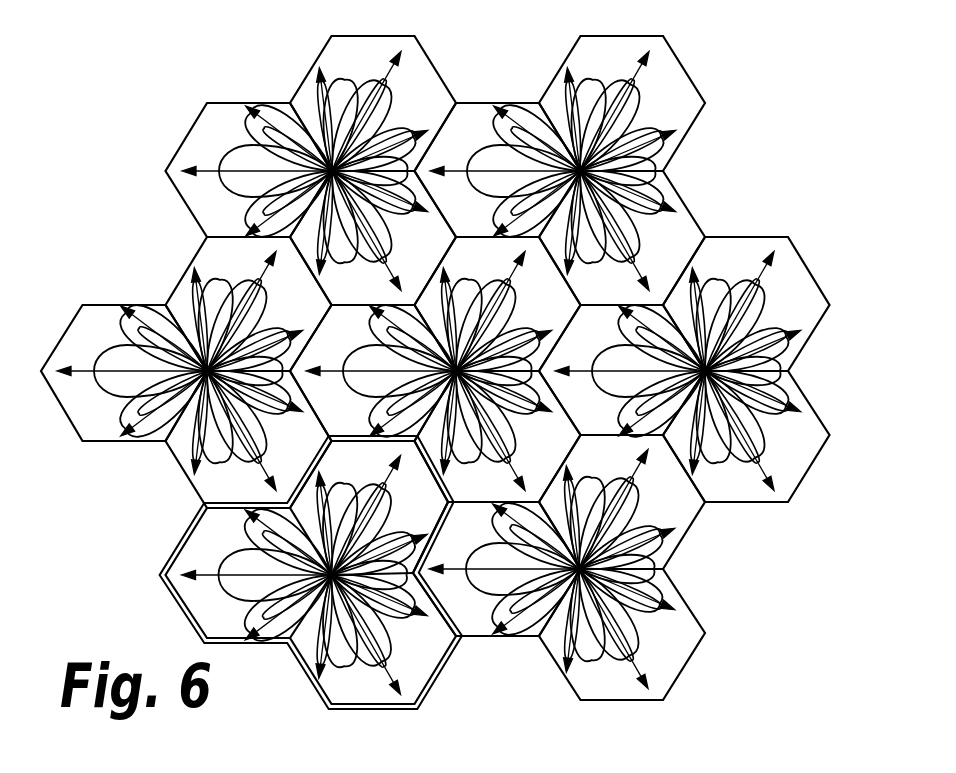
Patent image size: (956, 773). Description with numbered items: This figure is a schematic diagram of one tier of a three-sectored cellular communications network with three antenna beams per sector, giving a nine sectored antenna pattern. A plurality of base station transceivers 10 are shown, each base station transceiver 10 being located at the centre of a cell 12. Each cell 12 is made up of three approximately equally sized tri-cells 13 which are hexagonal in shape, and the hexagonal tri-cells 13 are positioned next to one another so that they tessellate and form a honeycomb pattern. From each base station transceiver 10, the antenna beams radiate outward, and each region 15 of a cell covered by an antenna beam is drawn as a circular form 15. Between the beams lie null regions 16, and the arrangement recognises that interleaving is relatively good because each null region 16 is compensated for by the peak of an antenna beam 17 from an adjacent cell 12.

The base station transceiver 10 is at (672, 150).
The cell 12 is at (178, 553).
The tri-cell 13 is at (741, 480).
The region covered by an antenna beam 15 is at (581, 103).
The null region 16 is at (503, 212).
The antenna beam 17 is at (375, 255).